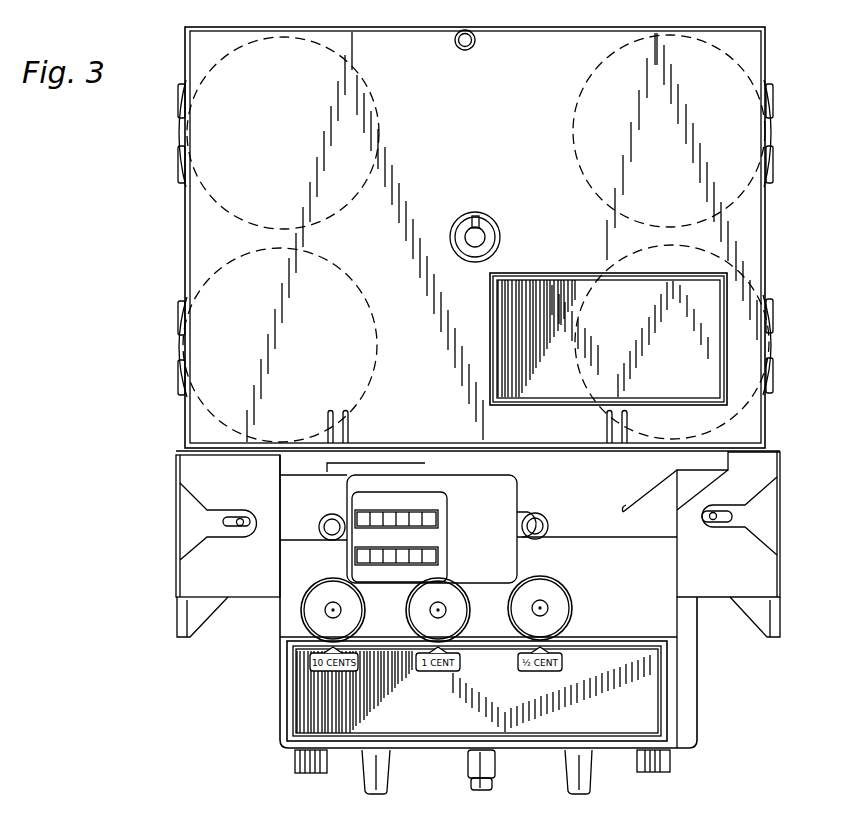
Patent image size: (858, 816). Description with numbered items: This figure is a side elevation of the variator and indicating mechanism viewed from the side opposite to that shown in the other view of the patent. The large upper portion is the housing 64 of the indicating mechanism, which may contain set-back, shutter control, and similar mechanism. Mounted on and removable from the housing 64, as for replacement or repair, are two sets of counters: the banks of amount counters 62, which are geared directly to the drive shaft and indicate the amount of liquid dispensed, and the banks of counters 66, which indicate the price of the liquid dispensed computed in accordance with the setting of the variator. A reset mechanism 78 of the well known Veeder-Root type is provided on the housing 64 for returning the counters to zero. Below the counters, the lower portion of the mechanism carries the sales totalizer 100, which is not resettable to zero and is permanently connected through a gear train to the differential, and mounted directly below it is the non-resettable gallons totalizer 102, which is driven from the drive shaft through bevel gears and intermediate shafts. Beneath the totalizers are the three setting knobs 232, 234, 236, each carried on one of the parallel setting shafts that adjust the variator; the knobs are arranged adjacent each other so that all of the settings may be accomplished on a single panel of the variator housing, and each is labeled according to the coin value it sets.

The banks of amount counters 62 is at (177, 340).
The housing 64 is at (476, 237).
The banks of counters 66 is at (178, 113).
The reset mechanism 78 is at (477, 216).
The sales totalizer 100 is at (440, 518).
The gallons totalizer 102 is at (440, 551).
The setting knob 232 is at (327, 586).
The setting knob 234 is at (473, 582).
The setting knob 236 is at (573, 594).